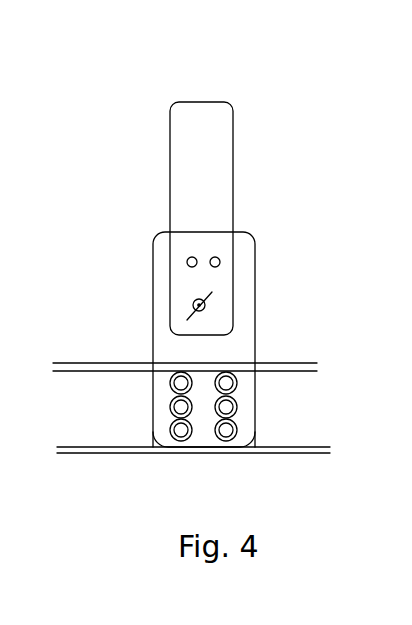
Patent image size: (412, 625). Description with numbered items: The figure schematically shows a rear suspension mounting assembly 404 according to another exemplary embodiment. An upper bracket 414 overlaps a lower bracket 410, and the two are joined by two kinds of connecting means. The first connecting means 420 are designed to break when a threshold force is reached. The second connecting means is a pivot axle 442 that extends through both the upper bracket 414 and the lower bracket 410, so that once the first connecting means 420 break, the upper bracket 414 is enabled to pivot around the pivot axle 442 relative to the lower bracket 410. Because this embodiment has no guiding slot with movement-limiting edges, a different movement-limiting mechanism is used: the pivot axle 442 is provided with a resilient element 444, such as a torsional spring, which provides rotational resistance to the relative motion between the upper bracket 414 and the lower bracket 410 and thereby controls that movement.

The rear suspension mounting assembly 404 is at (263, 103).
The upper bracket 414 is at (192, 127).
The lower bracket 410 is at (165, 342).
The first connecting means 420 is at (219, 262).
The pivot axle 442 is at (198, 303).
The resilient element 444 is at (207, 297).